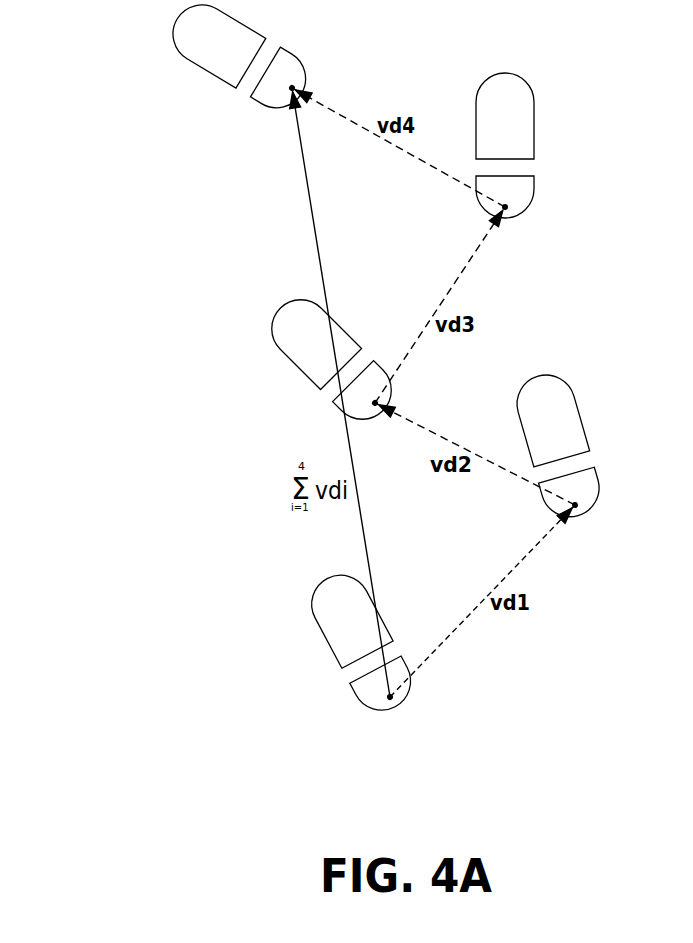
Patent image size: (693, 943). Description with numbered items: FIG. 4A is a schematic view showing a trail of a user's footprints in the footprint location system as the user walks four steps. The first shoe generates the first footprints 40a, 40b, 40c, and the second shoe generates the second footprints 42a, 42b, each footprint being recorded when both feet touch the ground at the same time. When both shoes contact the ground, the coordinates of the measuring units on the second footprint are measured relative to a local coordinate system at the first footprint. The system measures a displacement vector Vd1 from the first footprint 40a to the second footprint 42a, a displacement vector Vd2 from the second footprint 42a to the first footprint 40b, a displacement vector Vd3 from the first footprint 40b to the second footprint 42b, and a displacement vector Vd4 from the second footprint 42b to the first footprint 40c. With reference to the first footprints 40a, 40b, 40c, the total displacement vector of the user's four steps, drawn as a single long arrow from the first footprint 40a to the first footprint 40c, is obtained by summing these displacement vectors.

The first footprint 40a is at (315, 622).
The first footprint 40b is at (272, 327).
The first footprint 40c is at (172, 30).
The second footprint 42a is at (586, 423).
The second footprint 42b is at (532, 125).